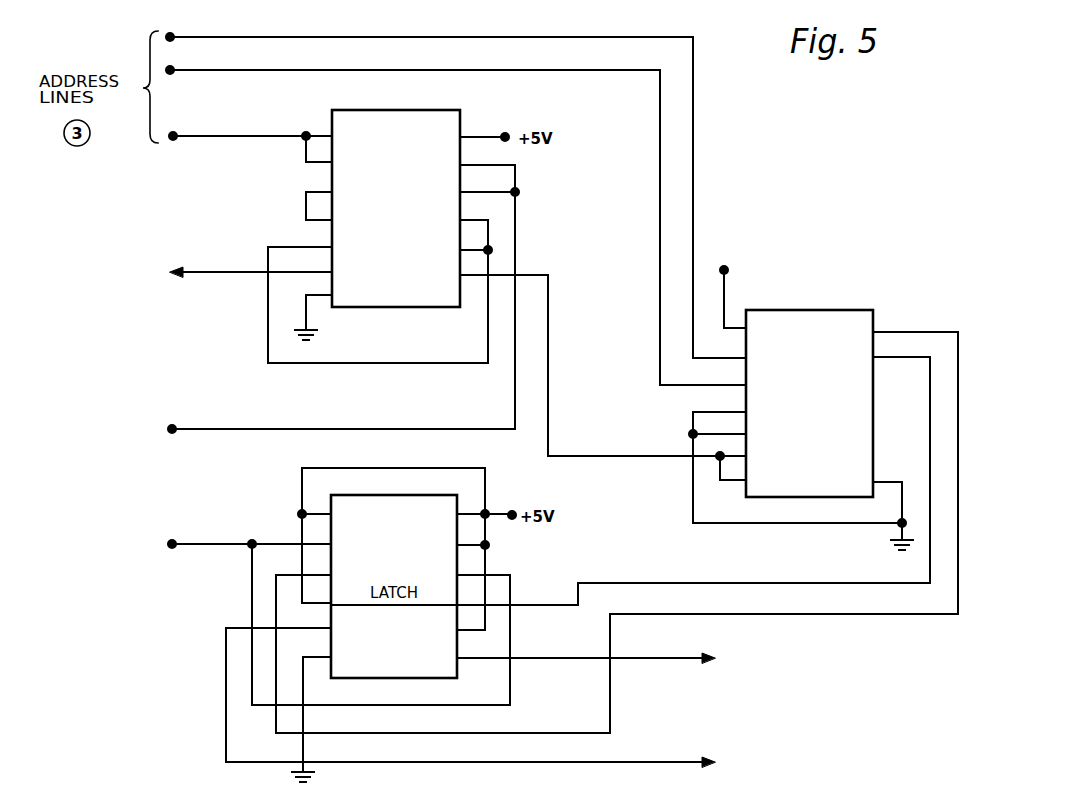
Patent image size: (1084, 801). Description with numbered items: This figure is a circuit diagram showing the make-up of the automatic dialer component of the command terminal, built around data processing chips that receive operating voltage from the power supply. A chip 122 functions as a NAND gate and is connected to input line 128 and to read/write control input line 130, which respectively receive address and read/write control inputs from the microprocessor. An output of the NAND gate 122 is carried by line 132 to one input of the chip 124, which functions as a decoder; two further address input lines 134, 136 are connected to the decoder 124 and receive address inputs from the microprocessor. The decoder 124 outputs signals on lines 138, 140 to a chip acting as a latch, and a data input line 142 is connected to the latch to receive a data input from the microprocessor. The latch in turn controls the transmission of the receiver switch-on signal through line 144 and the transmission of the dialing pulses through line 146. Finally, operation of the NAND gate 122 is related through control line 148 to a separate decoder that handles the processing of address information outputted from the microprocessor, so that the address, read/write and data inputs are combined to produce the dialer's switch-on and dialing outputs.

The NAND gate chip 122 is at (443, 123).
The decoder chip 124 is at (838, 316).
The input line 128 is at (222, 136).
The read/write control input line 130 is at (218, 429).
The NAND gate output line 132 is at (605, 456).
The address input line 134 is at (283, 37).
The address input line 136 is at (378, 70).
The decoder output line 138 is at (838, 613).
The decoder output line 140 is at (908, 357).
The data input line 142 is at (215, 544).
The receiver switch-on signal line 144 is at (633, 660).
The dialing pulse line 146 is at (665, 762).
The control line 148 is at (222, 272).